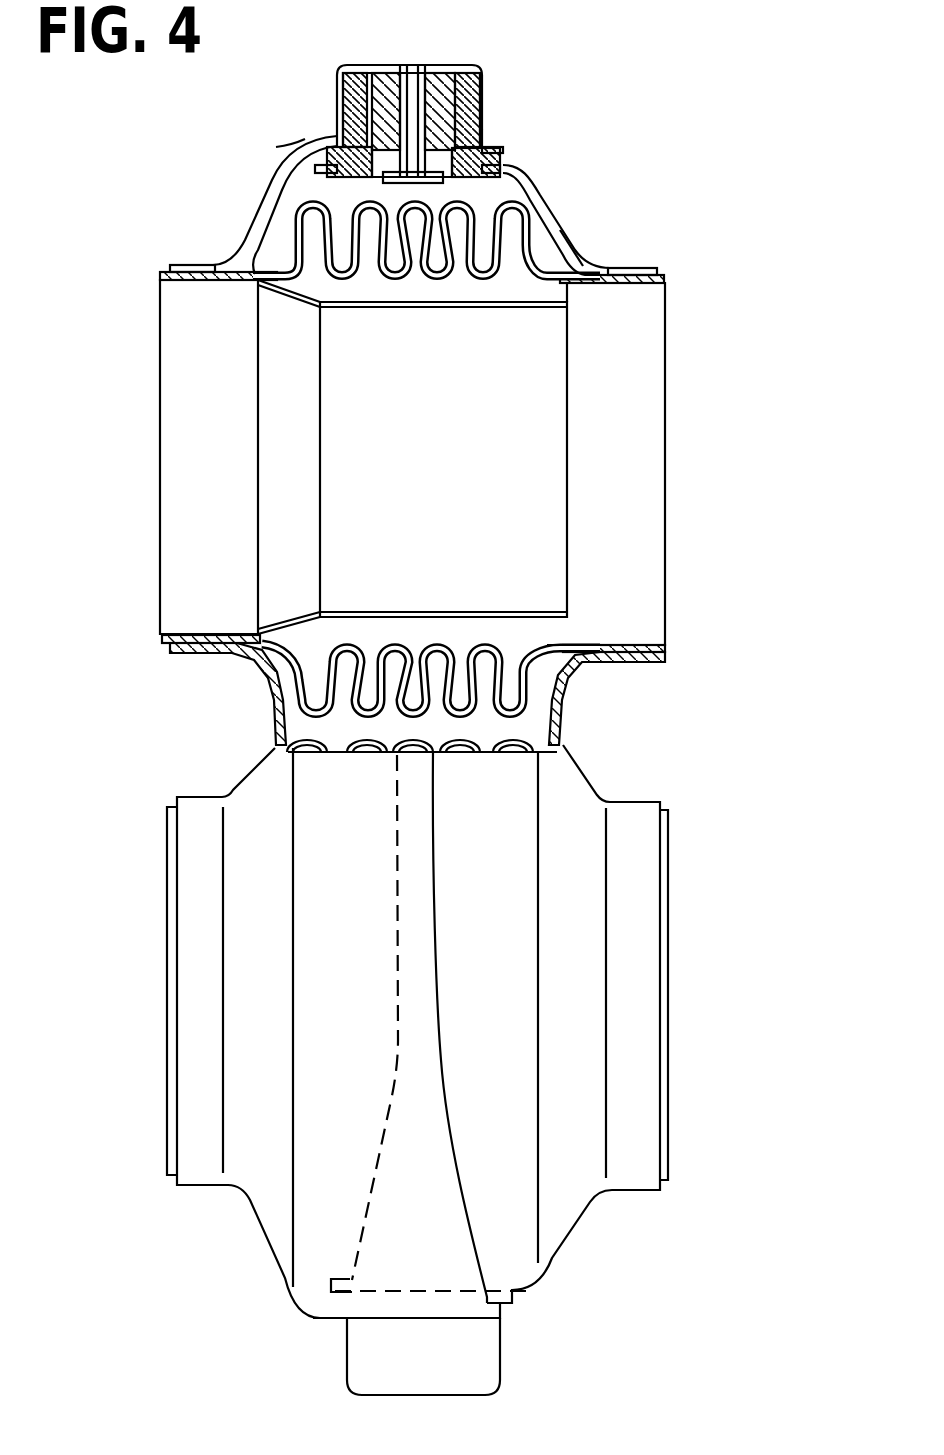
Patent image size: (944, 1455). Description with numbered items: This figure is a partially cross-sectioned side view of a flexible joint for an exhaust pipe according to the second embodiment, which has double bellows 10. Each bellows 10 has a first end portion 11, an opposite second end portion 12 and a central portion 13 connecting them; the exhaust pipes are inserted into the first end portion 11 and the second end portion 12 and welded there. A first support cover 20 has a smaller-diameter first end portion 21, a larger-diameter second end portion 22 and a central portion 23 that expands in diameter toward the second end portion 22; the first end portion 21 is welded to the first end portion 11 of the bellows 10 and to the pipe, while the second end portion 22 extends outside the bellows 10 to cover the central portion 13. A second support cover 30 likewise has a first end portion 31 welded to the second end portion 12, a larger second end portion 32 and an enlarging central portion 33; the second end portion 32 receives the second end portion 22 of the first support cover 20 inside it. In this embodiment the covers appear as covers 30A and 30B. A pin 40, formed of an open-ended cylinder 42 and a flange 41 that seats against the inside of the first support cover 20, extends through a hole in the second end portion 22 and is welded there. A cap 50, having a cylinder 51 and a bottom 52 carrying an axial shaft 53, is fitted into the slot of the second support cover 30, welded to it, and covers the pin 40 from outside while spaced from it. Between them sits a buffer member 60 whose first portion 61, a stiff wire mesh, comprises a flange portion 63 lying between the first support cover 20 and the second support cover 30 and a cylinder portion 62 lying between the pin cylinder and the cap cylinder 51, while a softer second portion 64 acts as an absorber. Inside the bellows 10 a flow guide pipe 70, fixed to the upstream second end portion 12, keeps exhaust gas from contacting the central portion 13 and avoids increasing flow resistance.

The bellows 10 is at (464, 290).
The first end portion 11 is at (664, 280).
The second end portion 12 is at (160, 279).
The central portion 13 is at (392, 284).
The first support cover 20 is at (580, 219).
The first end portion 21 is at (646, 273).
The second end portion 22 is at (540, 172).
The central portion 23 is at (582, 249).
The second support cover 30 is at (253, 201).
The housing half 30A is at (577, 1230).
The second cover 30B is at (250, 1217).
The first end portion 31 is at (190, 262).
The second end portion 32 is at (278, 147).
The central portion 33 is at (270, 175).
The pin 40 is at (497, 84).
The flange 41 is at (333, 178).
The cylinder 42 is at (338, 108).
The cap 50 is at (439, 117).
The cylinder 51 is at (340, 92).
The bottom 52 is at (447, 72).
The shaft 53 is at (410, 78).
The buffer member 60 is at (492, 100).
The first portion 61 is at (475, 86).
The cylinder portion 62 is at (480, 118).
The flange portion 63 is at (503, 166).
The second portion 64 is at (438, 156).
The flow guide pipe 70 is at (514, 315).